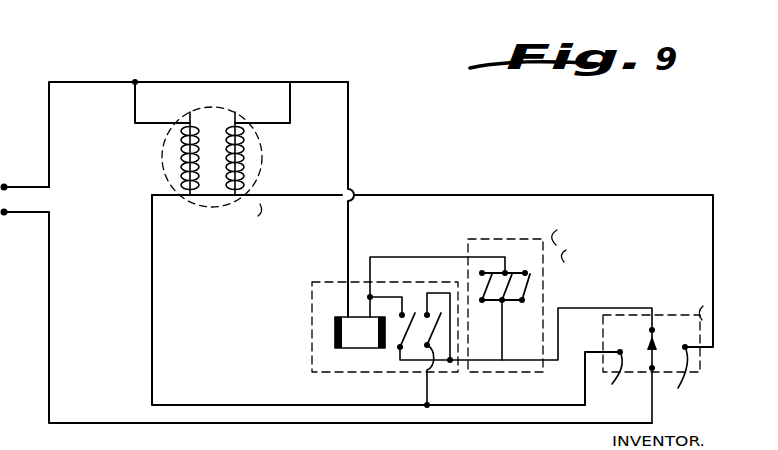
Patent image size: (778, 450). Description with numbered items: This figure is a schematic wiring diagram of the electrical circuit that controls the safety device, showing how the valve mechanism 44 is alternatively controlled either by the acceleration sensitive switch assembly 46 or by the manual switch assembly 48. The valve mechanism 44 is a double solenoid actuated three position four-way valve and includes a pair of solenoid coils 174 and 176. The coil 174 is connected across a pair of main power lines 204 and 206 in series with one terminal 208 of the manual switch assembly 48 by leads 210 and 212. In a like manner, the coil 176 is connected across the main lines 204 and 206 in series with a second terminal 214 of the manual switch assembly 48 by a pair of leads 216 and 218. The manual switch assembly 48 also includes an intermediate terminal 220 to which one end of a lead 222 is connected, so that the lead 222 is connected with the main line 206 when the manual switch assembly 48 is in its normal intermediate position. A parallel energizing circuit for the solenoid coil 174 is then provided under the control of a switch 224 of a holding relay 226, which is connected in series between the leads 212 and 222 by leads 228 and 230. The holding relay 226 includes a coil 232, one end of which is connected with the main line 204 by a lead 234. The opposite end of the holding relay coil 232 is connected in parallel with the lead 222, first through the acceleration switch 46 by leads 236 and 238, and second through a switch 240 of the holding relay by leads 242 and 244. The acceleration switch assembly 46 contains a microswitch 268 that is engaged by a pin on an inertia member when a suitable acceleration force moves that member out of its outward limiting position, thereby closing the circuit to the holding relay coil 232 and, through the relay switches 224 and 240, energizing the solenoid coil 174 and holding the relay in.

The valve mechanism 44 is at (213, 100).
The acceleration sensitive switch assembly 46 is at (551, 268).
The manual switch assembly 48 is at (697, 273).
The solenoid coil 174 is at (180, 160).
The solenoid coil 176 is at (246, 156).
The main power line 204 is at (103, 80).
The main power line 206 is at (118, 424).
The terminal 208 is at (609, 384).
The lead 210 is at (135, 123).
The lead 212 is at (152, 351).
The second terminal 214 is at (700, 372).
The lead 216 is at (270, 121).
The lead 218 is at (585, 194).
The intermediate terminal 220 is at (649, 323).
The lead 222 is at (468, 372).
The switch 224 is at (420, 306).
The holding relay 226 is at (319, 349).
The lead 228 is at (424, 389).
The lead 230 is at (446, 304).
The holding relay coil 232 is at (336, 316).
The lead 234 is at (350, 160).
The lead 236 is at (375, 256).
The lead 238 is at (521, 330).
The switch 240 is at (405, 335).
The lead 242 is at (395, 284).
The lead 244 is at (404, 336).
The microswitch 268 is at (531, 293).